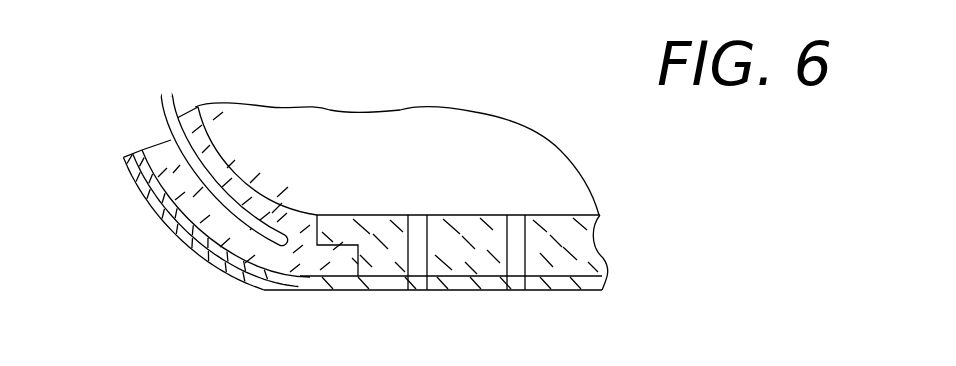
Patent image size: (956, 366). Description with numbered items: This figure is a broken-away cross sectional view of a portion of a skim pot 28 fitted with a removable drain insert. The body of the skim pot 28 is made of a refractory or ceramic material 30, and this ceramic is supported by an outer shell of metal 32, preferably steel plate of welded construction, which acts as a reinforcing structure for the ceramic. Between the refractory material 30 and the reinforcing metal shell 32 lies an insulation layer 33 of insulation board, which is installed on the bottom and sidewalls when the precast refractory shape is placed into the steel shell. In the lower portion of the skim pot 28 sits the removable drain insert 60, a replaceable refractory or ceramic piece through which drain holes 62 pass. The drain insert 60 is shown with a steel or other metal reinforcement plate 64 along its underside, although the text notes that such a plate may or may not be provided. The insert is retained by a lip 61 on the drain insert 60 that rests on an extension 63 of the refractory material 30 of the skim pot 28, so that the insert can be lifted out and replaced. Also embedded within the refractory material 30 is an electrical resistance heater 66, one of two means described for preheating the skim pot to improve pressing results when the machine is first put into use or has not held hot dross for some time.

The skim pot 28 is at (191, 84).
The refractory or ceramic material 30 is at (159, 146).
The outer shell of metal 32 is at (175, 220).
The insulation layer 33 is at (143, 163).
The removable drain insert 60 is at (598, 217).
The lip 61 is at (331, 214).
The drain holes 62 is at (415, 213).
The extension 63 is at (356, 262).
The metal reinforcement plate 64 is at (605, 288).
The electrical resistance heater 66 is at (176, 93).